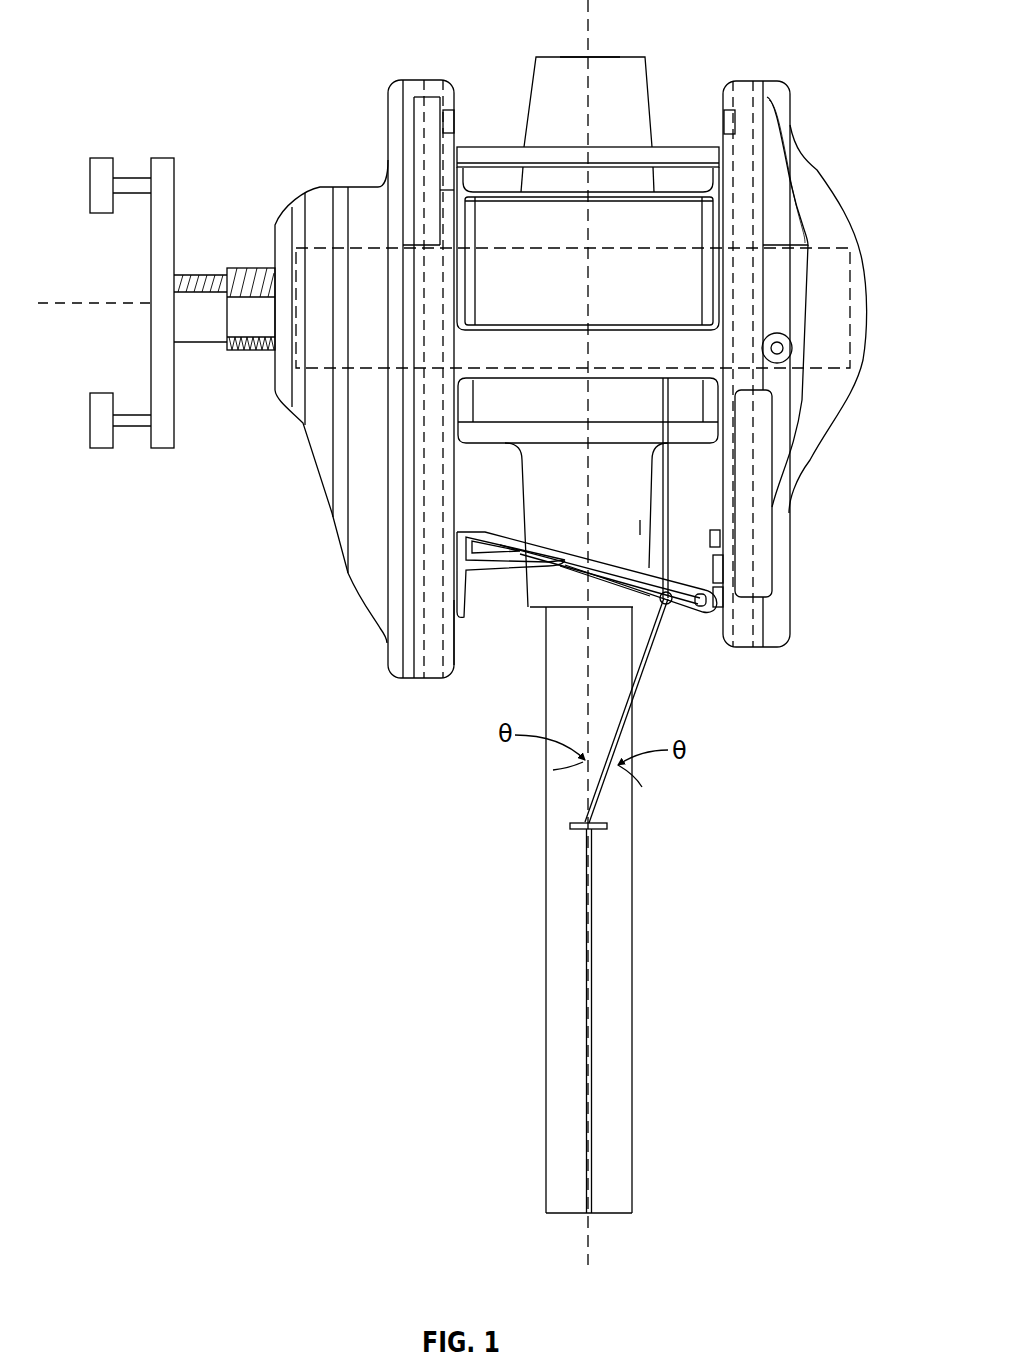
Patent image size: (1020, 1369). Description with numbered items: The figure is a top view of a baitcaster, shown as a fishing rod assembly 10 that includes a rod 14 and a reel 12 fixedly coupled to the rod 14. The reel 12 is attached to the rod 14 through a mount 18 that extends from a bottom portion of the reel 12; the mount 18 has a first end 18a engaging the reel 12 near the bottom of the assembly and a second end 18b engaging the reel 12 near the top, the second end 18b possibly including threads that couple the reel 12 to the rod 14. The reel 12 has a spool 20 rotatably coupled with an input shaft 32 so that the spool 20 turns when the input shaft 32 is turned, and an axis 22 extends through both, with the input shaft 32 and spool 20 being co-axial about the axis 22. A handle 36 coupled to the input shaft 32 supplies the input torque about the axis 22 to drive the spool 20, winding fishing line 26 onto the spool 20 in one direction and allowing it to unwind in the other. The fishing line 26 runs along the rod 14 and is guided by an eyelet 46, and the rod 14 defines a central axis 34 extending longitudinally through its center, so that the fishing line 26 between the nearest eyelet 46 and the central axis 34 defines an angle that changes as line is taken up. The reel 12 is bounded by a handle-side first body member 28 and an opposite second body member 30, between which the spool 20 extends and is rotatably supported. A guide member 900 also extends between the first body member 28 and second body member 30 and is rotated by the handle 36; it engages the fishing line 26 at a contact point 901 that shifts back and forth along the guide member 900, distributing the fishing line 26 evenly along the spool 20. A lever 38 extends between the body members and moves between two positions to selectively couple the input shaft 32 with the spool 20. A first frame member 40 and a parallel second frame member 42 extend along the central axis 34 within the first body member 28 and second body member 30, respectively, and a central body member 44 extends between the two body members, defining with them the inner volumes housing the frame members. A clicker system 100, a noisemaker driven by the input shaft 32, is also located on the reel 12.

The fishing rod assembly 10 is at (120, 105).
The reel 12 is at (820, 45).
The rod 14 is at (633, 960).
The mount 18 is at (623, 83).
The first end 18a is at (618, 68).
The second end 18b is at (637, 527).
The spool 20 is at (515, 195).
The axis 22 is at (100, 305).
The fishing line 26 is at (643, 672).
The first body member 28 is at (325, 462).
The second body member 30 is at (833, 423).
The input shaft 32 is at (262, 343).
The central axis 34 is at (590, 1240).
The handle 36 is at (160, 450).
The lever 38 is at (550, 155).
The first frame member 40 is at (430, 680).
The second frame member 42 is at (755, 625).
The body member 44 is at (455, 643).
The eyelet 46 is at (573, 832).
The clicker system 100 is at (500, 248).
The guide member 900 is at (475, 568).
The contact point 901 is at (670, 608).